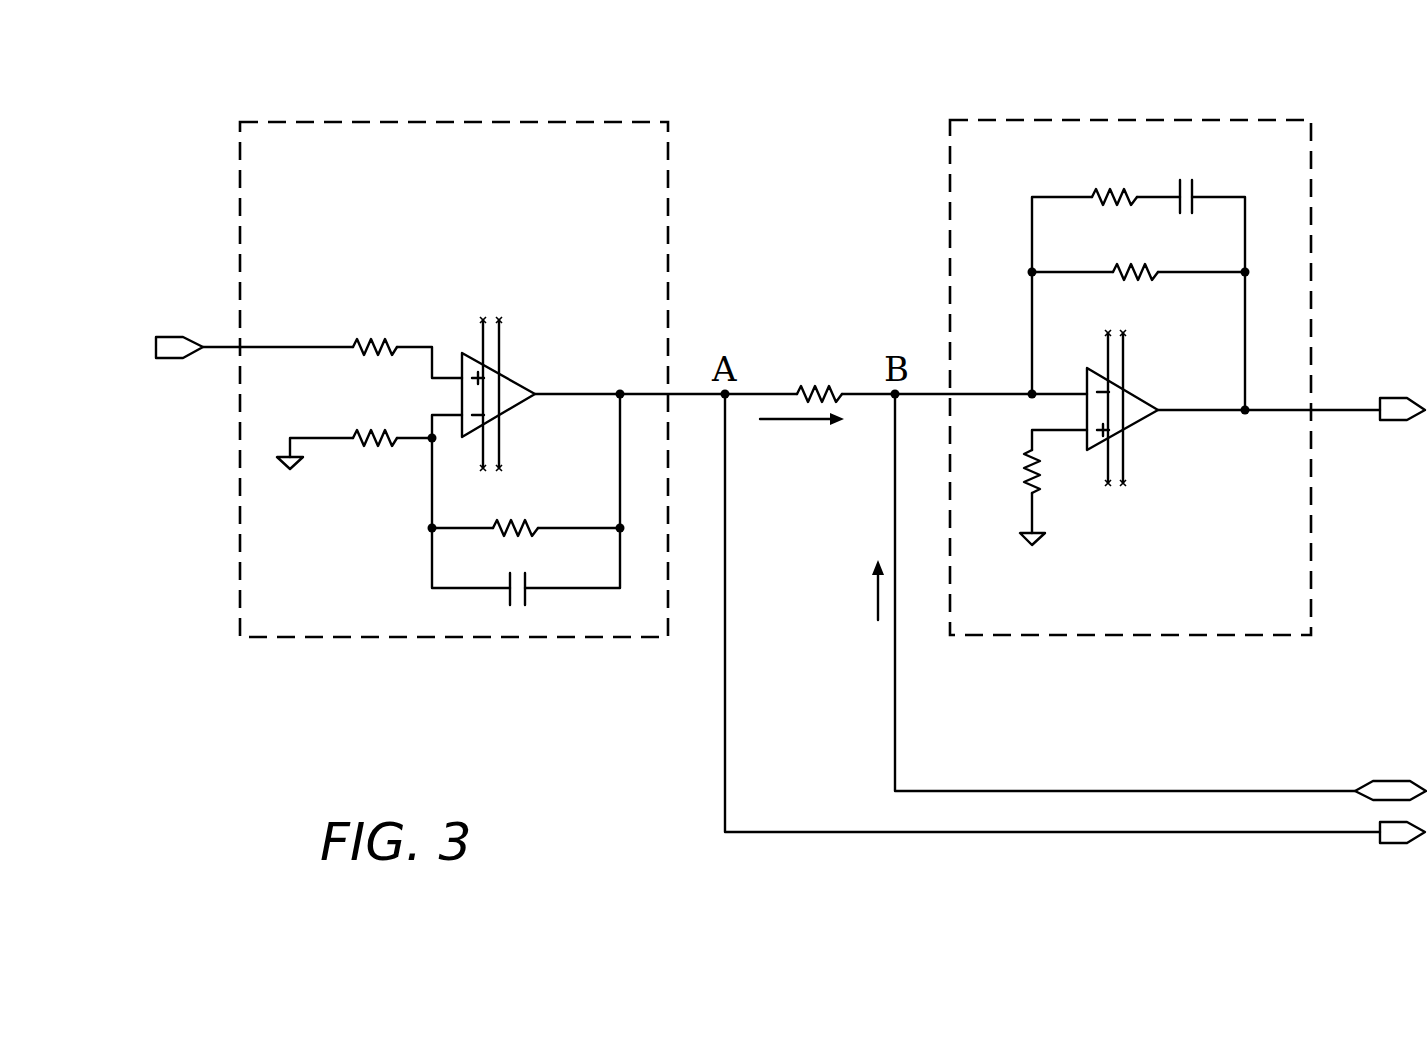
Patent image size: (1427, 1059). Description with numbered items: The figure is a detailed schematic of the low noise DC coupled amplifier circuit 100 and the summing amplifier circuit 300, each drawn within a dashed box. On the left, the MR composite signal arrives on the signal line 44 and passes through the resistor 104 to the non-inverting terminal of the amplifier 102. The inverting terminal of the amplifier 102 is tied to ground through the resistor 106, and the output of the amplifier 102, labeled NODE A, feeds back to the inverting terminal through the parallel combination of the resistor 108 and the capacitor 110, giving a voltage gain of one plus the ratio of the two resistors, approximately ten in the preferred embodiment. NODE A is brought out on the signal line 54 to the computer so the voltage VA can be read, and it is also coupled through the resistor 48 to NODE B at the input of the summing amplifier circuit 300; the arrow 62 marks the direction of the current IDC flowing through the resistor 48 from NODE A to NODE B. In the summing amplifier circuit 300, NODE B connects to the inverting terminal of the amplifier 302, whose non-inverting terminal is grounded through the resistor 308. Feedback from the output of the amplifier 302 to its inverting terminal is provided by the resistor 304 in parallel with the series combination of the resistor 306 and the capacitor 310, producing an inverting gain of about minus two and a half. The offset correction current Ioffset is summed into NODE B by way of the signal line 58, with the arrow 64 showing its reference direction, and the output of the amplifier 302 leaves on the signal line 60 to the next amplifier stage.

The signal line 44 is at (178, 360).
The low noise DC coupled amplifier circuit 100 is at (578, 121).
The amplifier 102 is at (511, 385).
The resistor 104 is at (381, 343).
The resistor 106 is at (382, 435).
The resistor 108 is at (511, 526).
The capacitor 110 is at (520, 575).
The resistor 48 is at (823, 385).
The arrow 62 is at (792, 427).
The arrow 64 is at (877, 604).
The summing amplifier circuit 300 is at (1218, 119).
The amplifier 302 is at (1138, 398).
The resistor 304 is at (1143, 268).
The resistor 306 is at (1112, 190).
The resistor 308 is at (1025, 460).
The capacitor 310 is at (1186, 178).
The signal line 60 is at (1398, 421).
The signal line 58 is at (1400, 780).
The signal line 54 is at (1400, 840).